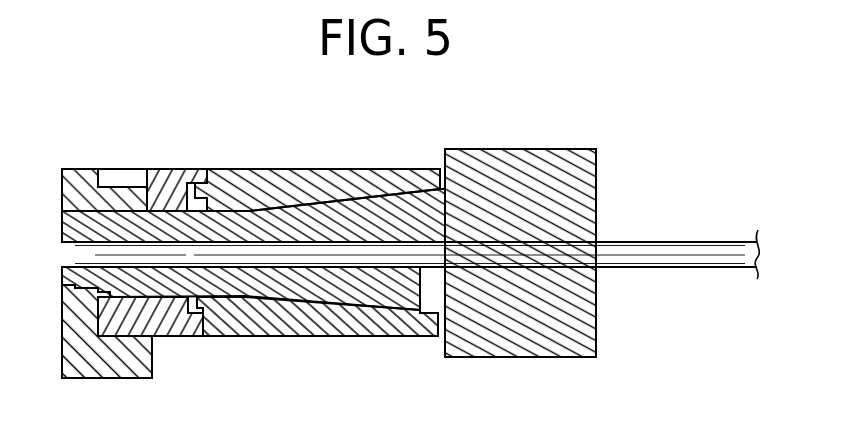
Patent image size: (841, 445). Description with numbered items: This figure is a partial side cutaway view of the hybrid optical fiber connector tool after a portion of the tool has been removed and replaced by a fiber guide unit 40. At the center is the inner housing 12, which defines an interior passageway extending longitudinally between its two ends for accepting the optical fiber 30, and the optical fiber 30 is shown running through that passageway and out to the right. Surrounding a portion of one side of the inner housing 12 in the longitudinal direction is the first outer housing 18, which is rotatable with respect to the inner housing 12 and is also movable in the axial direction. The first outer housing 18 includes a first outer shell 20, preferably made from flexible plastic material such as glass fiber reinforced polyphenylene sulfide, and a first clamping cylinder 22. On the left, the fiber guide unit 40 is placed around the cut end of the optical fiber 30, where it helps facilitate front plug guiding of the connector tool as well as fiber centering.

The inner housing 12 is at (337, 215).
The first outer housing 18 is at (240, 168).
The first outer shell 20 is at (338, 337).
The first clamping cylinder 22 is at (185, 330).
The optical fiber 30 is at (690, 269).
The fiber guide unit 40 is at (118, 372).